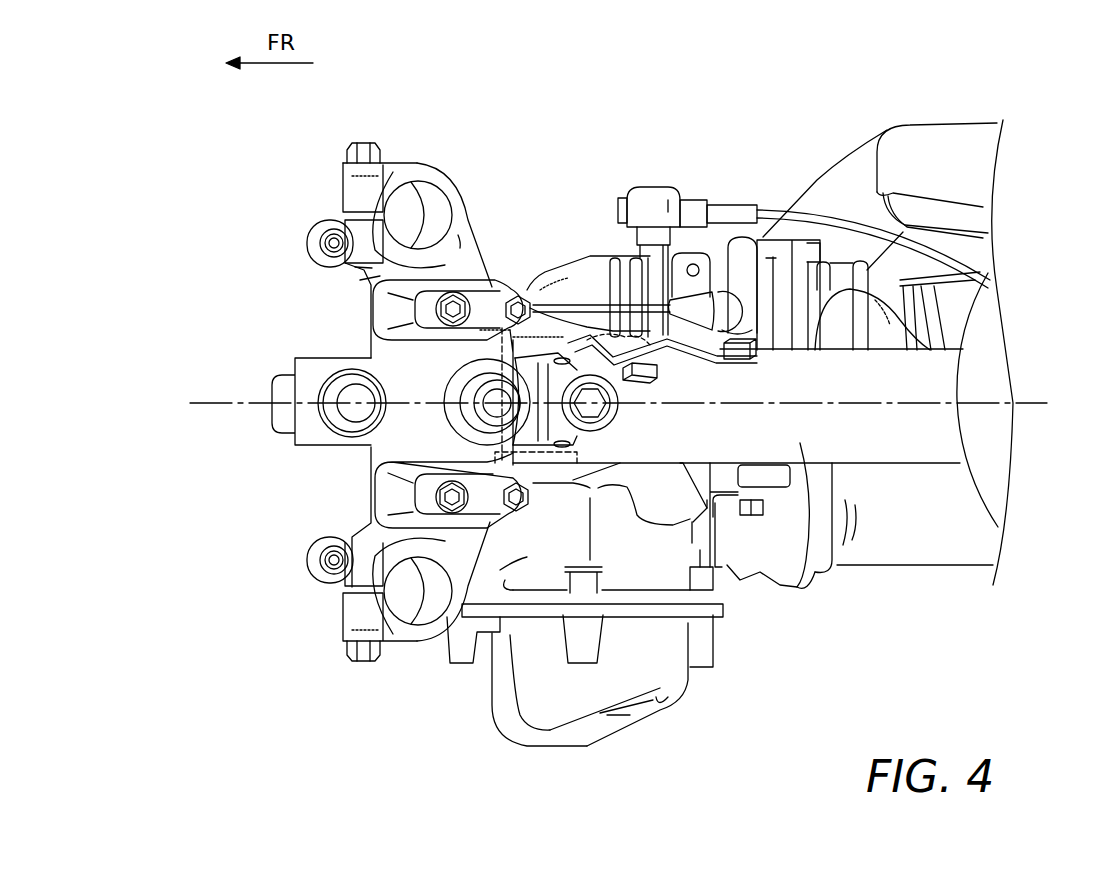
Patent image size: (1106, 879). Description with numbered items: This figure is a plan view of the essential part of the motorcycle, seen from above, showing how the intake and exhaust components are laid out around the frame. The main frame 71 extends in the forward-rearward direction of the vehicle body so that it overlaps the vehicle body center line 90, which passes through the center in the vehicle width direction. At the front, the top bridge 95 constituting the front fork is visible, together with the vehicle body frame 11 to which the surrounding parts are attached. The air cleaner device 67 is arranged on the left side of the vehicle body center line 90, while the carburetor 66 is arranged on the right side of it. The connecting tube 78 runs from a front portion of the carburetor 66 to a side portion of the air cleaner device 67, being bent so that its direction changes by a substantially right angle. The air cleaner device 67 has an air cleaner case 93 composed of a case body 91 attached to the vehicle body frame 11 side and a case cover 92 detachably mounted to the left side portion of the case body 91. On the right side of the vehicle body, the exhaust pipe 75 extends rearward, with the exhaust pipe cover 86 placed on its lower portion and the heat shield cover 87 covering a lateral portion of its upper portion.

The vehicle body frame 11 is at (798, 377).
The carburetor 66 is at (653, 183).
The air cleaner device 67 is at (567, 748).
The main frame 71 is at (800, 445).
The exhaust pipe 75 is at (977, 213).
The connecting tube 78 is at (583, 273).
The exhaust pipe cover 86 is at (843, 163).
The heat shield cover 87 is at (952, 140).
The vehicle body center line 90 is at (220, 400).
The case body 91 is at (527, 548).
The case cover 92 is at (643, 705).
The air cleaner case 93 is at (507, 727).
The top bridge 95 is at (388, 307).